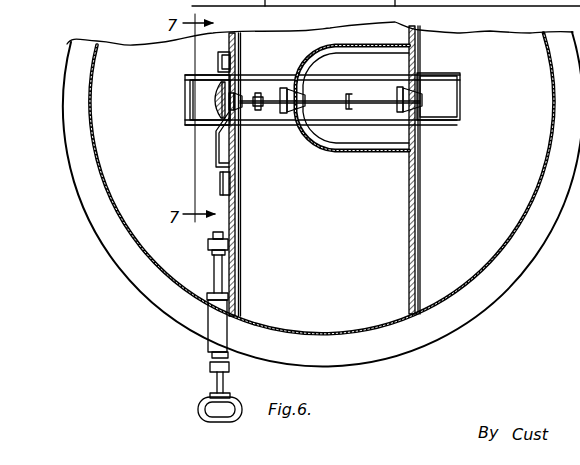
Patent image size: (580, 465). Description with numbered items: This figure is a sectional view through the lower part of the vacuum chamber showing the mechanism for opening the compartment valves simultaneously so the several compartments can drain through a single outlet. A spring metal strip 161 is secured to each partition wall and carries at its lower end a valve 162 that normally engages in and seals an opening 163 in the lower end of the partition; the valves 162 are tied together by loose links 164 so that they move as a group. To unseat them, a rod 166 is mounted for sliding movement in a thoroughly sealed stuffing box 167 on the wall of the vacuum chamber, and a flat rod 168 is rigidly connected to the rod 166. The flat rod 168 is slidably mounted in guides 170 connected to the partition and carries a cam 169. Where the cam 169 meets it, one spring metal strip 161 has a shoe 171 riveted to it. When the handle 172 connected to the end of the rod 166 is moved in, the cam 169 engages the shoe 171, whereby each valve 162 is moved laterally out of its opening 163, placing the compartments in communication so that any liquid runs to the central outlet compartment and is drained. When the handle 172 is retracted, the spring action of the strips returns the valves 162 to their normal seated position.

The spring metal strip 161 is at (214, 108).
The valve 162 is at (238, 112).
The opening 163 is at (235, 79).
The loose link 164 is at (261, 94).
The rod 166 is at (218, 273).
The stuffing box 167 is at (220, 322).
The flat rod 168 is at (236, 211).
The cam 169 is at (217, 153).
The guide 170 is at (218, 62).
The shoe 171 is at (212, 103).
The handle 172 is at (226, 421).